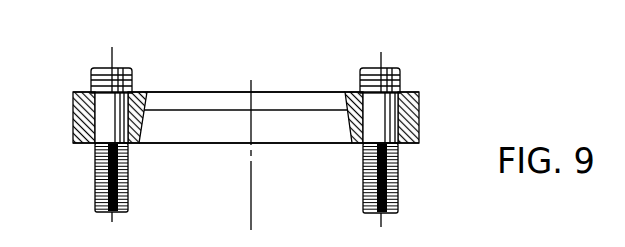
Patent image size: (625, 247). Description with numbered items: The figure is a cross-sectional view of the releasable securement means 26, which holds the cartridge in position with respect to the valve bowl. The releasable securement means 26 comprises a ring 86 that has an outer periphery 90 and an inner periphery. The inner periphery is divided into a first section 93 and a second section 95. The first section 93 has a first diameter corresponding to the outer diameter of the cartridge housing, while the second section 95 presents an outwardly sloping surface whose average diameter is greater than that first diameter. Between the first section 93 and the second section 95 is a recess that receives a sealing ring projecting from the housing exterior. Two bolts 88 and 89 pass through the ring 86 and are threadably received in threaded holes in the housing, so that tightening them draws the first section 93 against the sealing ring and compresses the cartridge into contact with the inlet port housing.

The releasable securement means 26 is at (425, 124).
The ring 86 is at (104, 127).
The bolt 88 is at (128, 188).
The bolt 89 is at (400, 178).
The outer periphery 90 is at (73, 122).
The first section 93 is at (148, 93).
The second section 95 is at (140, 125).